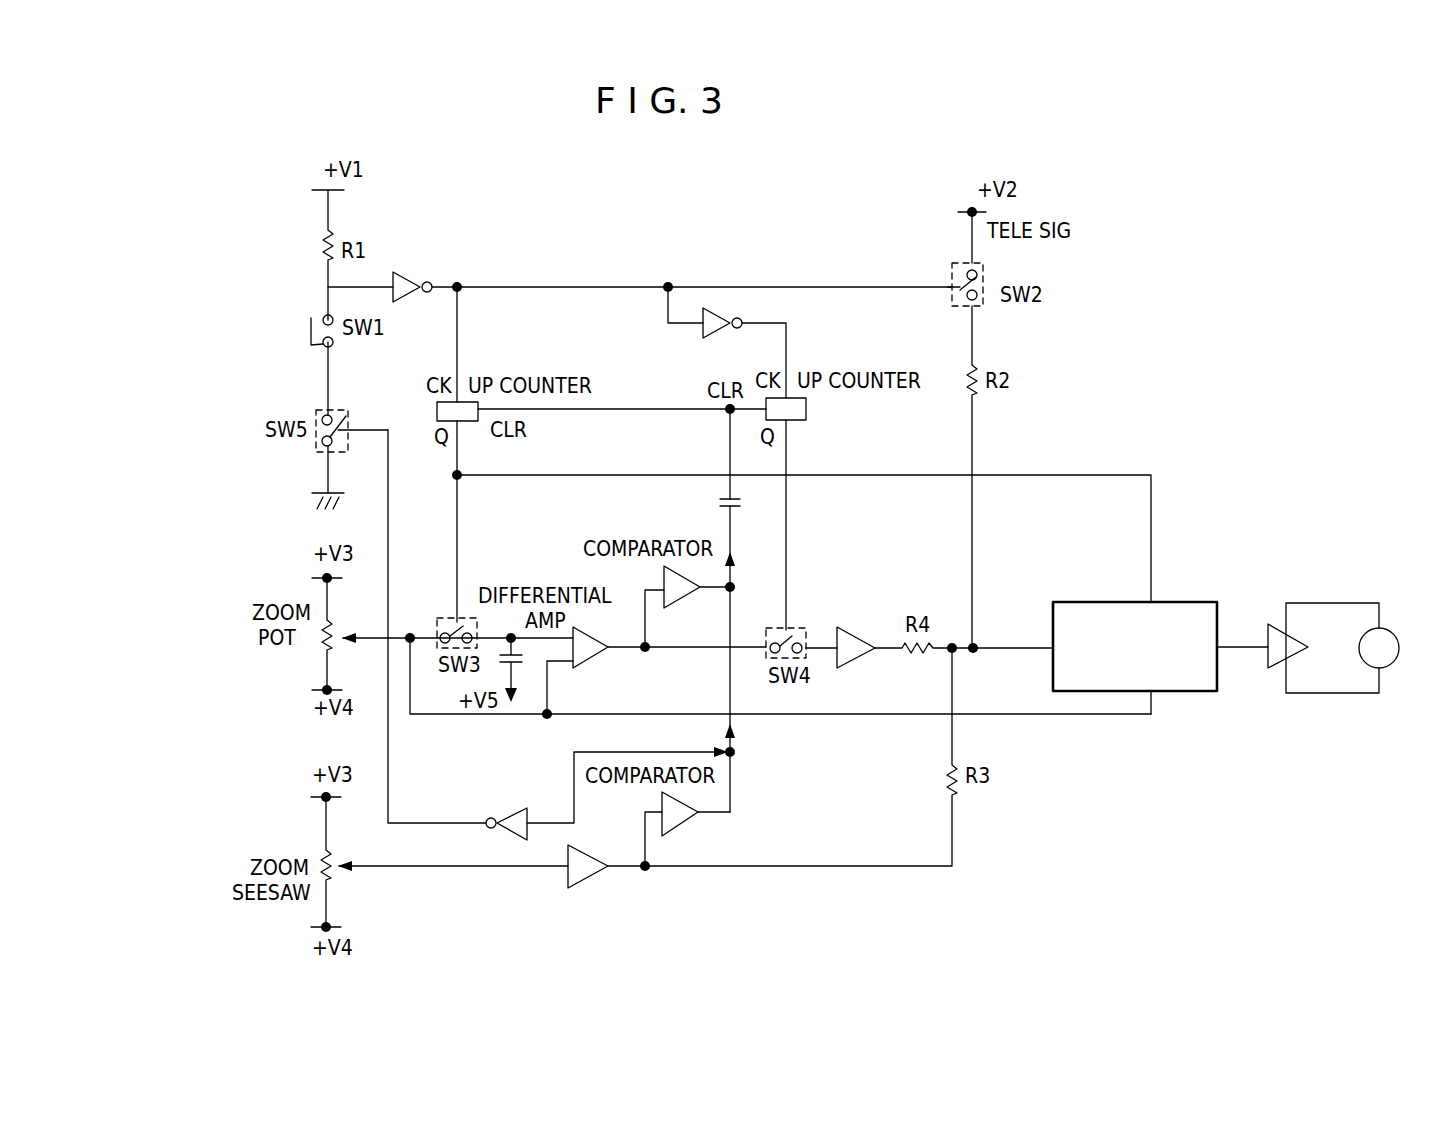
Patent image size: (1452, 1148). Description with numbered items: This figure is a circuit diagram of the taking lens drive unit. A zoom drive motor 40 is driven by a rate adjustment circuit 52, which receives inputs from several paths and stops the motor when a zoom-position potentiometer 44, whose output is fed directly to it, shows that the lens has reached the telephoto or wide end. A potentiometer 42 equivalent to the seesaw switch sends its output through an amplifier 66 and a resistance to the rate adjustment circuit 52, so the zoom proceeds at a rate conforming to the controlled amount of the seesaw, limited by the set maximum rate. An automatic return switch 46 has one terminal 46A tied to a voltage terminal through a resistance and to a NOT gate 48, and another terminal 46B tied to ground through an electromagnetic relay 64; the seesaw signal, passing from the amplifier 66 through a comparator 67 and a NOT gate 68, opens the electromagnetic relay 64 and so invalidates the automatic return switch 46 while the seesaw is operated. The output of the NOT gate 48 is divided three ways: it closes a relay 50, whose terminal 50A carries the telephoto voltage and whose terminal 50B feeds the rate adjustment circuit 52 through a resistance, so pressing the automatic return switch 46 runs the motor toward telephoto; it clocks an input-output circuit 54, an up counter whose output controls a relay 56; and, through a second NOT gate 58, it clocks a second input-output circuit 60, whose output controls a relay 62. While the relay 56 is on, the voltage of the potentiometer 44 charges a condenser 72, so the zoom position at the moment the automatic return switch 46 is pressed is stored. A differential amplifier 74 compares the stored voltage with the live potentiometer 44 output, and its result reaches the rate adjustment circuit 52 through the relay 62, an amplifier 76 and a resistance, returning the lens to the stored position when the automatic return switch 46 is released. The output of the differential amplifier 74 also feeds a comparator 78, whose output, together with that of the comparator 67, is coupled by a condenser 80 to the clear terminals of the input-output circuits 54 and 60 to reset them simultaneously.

The zoom drive motor 40 is at (1386, 628).
The potentiometer 42 is at (322, 850).
The potentiometer 44 is at (319, 651).
The automatic return switch 46 is at (311, 325).
The terminal of the switch SW1 46A is at (323, 315).
The terminal of the switch SW1 46B is at (322, 348).
The NOT gate 48 is at (411, 283).
The relay 50 is at (952, 270).
The terminal of the switch SW2 50A is at (979, 273).
The terminal of the switch SW2 50B is at (978, 297).
The rate adjustment circuit 52 is at (1190, 602).
The input-output circuit 54 is at (437, 410).
The relay 56 is at (448, 620).
The second NOT gate 58 is at (708, 335).
The second input-output circuit 60 is at (806, 410).
The relay 62 is at (792, 630).
The electromagnetic relay 64 is at (318, 445).
The amplifier 66 is at (590, 880).
The comparator 67 is at (680, 825).
The NOT gate 68 is at (522, 812).
The condenser 72 is at (500, 660).
The differential amplifier 74 is at (590, 662).
The amplifier 76 is at (855, 660).
The comparator 78 is at (690, 597).
The condenser 80 is at (720, 503).